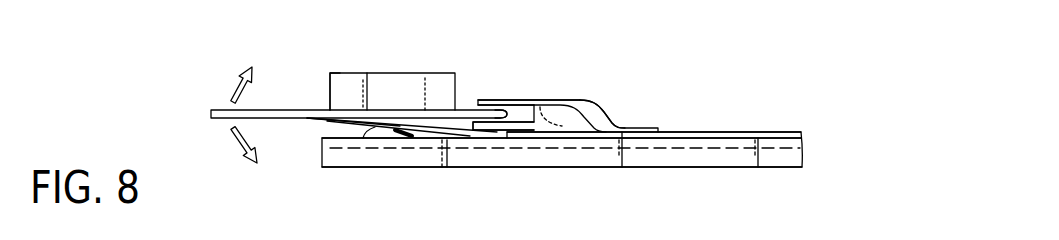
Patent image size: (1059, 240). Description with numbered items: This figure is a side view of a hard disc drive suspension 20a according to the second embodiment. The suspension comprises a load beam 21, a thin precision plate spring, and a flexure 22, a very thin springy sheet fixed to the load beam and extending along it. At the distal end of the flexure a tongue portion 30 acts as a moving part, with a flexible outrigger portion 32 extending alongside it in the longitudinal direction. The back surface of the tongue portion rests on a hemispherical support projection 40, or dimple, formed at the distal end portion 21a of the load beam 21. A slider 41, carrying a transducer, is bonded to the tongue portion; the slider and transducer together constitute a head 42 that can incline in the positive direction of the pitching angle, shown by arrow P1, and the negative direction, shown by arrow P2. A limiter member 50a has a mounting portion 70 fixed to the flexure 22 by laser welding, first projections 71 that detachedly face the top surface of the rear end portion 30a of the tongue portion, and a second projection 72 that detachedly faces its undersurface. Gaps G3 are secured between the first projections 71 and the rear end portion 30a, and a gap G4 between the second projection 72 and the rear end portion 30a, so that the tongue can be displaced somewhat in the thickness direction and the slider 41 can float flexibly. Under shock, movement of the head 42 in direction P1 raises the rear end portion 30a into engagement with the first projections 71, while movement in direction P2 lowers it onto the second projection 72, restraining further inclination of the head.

The suspension 20a is at (778, 110).
The load beam 21 is at (729, 167).
The distal end portion of the load beam 21a is at (381, 165).
The flexure 22 is at (727, 132).
The tongue portion 30 is at (350, 110).
The rear end portion of the tongue portion 30a is at (506, 108).
The outrigger portion 32 is at (345, 121).
The support projection 40 is at (398, 134).
The slider 41 is at (392, 73).
The head 42 is at (326, 69).
The limiter member 50a is at (612, 110).
The mounting portion 70 is at (649, 124).
The first projections 71 is at (501, 100).
The second projection 72 is at (503, 131).
The gap G3 is at (476, 107).
The gap G4 is at (474, 121).
The positive direction of the pitching angle P1 is at (251, 160).
The negative direction of the pitching angle P2 is at (248, 72).